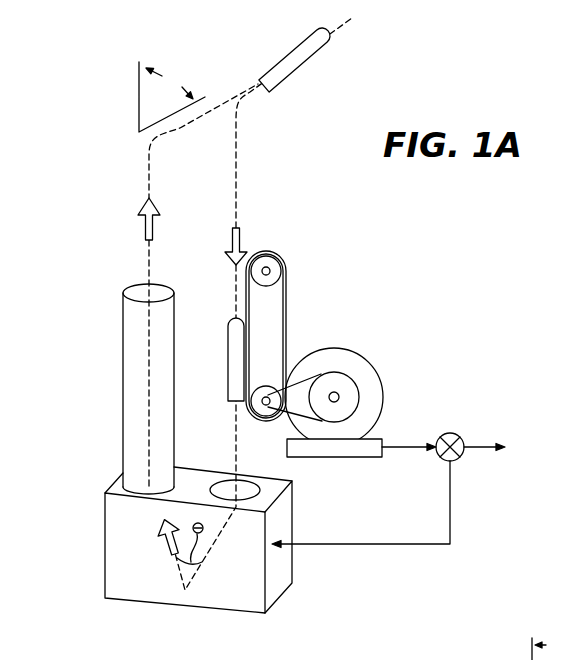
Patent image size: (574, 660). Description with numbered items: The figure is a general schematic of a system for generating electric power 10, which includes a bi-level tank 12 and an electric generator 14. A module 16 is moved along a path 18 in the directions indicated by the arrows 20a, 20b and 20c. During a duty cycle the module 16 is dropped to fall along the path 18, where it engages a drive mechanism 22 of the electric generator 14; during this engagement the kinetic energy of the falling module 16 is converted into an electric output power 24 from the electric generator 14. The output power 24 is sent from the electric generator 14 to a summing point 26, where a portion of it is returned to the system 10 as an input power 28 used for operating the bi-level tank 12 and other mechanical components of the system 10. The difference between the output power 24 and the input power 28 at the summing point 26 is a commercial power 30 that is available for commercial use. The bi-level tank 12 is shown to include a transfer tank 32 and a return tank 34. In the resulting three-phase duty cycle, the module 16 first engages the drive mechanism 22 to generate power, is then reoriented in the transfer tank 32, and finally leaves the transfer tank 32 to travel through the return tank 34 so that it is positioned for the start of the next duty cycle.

The system for generating electric power 10 is at (445, 272).
The bi-level tank 12 is at (103, 357).
The electric generator 14 is at (358, 362).
The module 16 is at (283, 68).
The path 18 is at (237, 170).
The arrow 20a is at (243, 232).
The arrow 20b is at (173, 550).
The arrow 20c is at (142, 230).
The drive mechanism 22 is at (287, 300).
The electric output power 24 is at (412, 440).
The summing point 26 is at (450, 432).
The input power 28 is at (410, 535).
The commercial power 30 is at (487, 440).
The transfer tank 32 is at (113, 525).
The return tank 34 is at (123, 443).